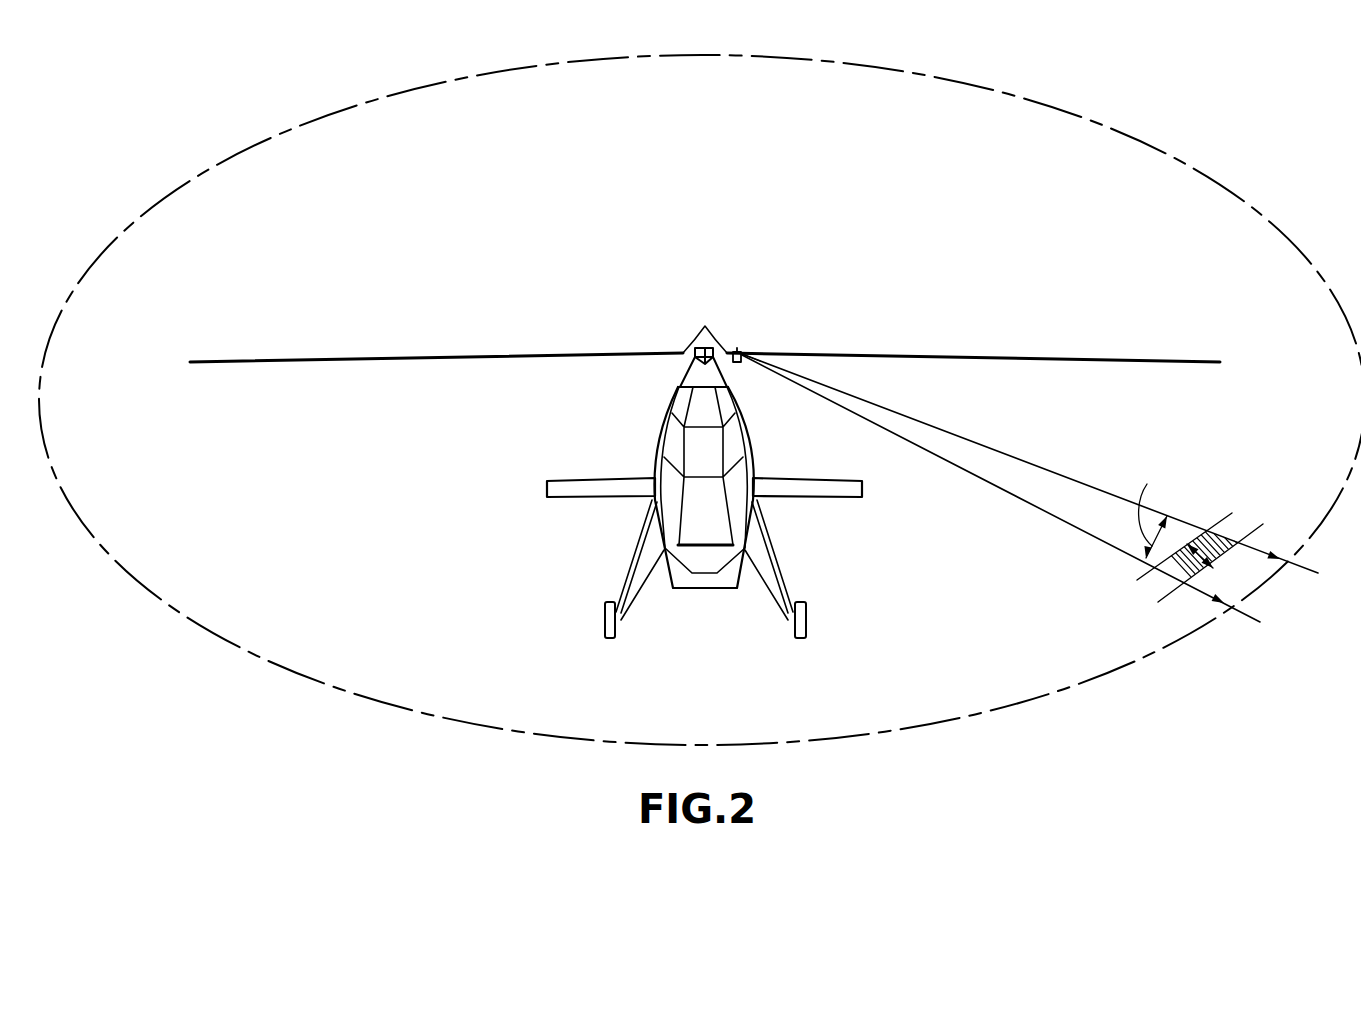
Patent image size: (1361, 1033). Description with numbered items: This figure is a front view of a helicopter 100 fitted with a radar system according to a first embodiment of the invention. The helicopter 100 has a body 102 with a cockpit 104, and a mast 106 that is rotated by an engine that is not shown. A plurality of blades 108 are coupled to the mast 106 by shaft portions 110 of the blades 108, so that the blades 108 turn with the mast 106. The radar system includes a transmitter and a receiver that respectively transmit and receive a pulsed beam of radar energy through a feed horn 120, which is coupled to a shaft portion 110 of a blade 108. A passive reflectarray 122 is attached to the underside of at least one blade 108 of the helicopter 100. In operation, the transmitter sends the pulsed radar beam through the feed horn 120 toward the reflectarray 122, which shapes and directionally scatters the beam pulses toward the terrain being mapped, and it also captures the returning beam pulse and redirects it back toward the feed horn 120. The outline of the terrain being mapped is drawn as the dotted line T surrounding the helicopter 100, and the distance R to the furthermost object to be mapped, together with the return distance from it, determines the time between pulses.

The helicopter 100 is at (777, 272).
The body 102 is at (753, 467).
The cockpit 104 is at (700, 497).
The mast 106 is at (697, 375).
The blades 108 is at (427, 357).
The shaft portions 110 is at (708, 327).
The feed horn 120 is at (743, 372).
The passive reflectarray 122 is at (759, 369).
The outline of terrain being mapped T is at (973, 717).
The distance of furthermost object R is at (1039, 496).